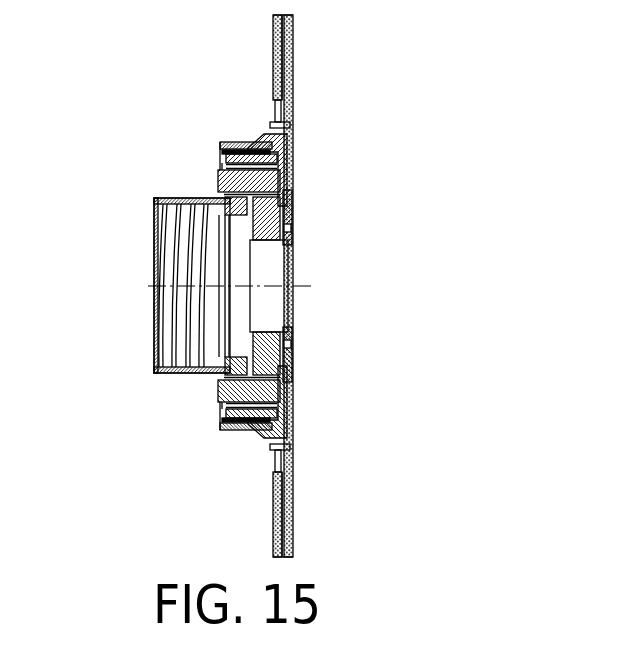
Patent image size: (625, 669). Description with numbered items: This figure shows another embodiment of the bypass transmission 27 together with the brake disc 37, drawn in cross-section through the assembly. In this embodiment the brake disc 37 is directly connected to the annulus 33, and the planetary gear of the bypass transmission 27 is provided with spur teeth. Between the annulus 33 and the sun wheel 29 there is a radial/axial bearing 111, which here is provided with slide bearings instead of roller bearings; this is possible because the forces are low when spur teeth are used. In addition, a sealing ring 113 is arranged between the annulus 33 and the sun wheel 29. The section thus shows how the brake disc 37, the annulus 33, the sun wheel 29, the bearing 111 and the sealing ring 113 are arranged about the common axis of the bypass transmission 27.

The bypass transmission 27 is at (209, 132).
The sun wheel 29 is at (215, 197).
The annulus 33 is at (233, 147).
The brake disc 37 is at (293, 53).
The radial/axial bearing 111 is at (287, 198).
The sealing ring 113 is at (287, 228).